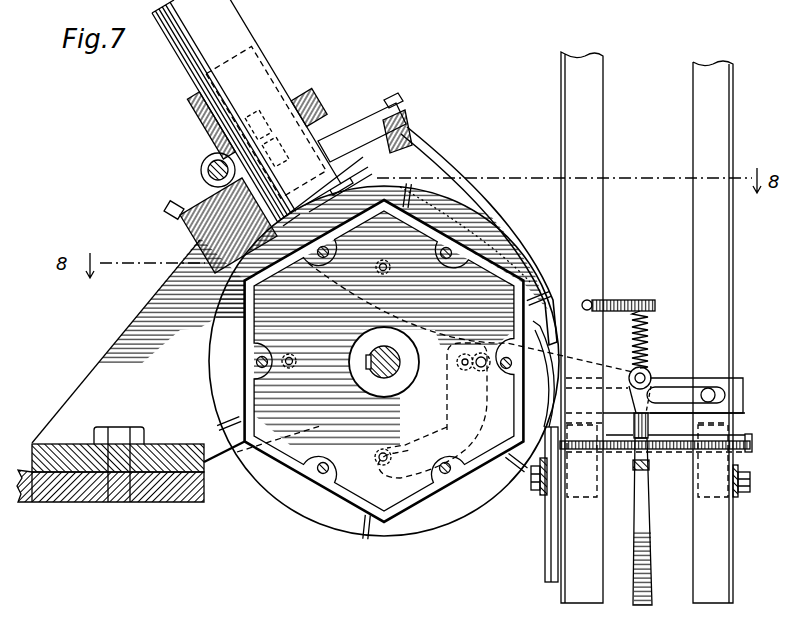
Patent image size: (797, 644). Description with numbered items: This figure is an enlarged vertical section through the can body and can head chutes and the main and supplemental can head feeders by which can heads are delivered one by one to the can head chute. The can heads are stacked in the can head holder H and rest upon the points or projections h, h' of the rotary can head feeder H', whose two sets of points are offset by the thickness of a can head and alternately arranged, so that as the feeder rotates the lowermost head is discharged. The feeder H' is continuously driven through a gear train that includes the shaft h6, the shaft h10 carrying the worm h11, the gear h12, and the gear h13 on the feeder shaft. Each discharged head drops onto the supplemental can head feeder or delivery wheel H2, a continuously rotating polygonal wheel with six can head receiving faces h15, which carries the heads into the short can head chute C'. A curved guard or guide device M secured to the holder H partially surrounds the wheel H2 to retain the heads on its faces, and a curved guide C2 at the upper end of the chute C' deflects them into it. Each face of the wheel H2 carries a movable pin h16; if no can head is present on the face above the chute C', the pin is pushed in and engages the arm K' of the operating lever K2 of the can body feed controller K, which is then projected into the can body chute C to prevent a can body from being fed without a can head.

The can head holder H is at (248, 111).
The rotary can head feeder H' is at (365, 137).
The supplemental can head feeder or delivery wheel H2 is at (247, 315).
The can head supporting points or projections h is at (291, 208).
The can head supporting points or projections h' is at (338, 189).
The shaft h6 is at (395, 370).
The shaft h10 is at (201, 170).
The worm h11 is at (205, 180).
The gear h12 is at (271, 96).
The gear h13 is at (311, 100).
The can head receiving faces h15 is at (247, 378).
The movable pin or device h16 is at (447, 258).
The curved guard or guide device M is at (430, 163).
The can body chute C is at (647, 327).
The can head chute C' is at (529, 504).
The curved guide C2 is at (540, 369).
The can body feed controller K is at (634, 526).
The arm of the operating lever K' is at (662, 356).
The operating lever K2 is at (413, 448).